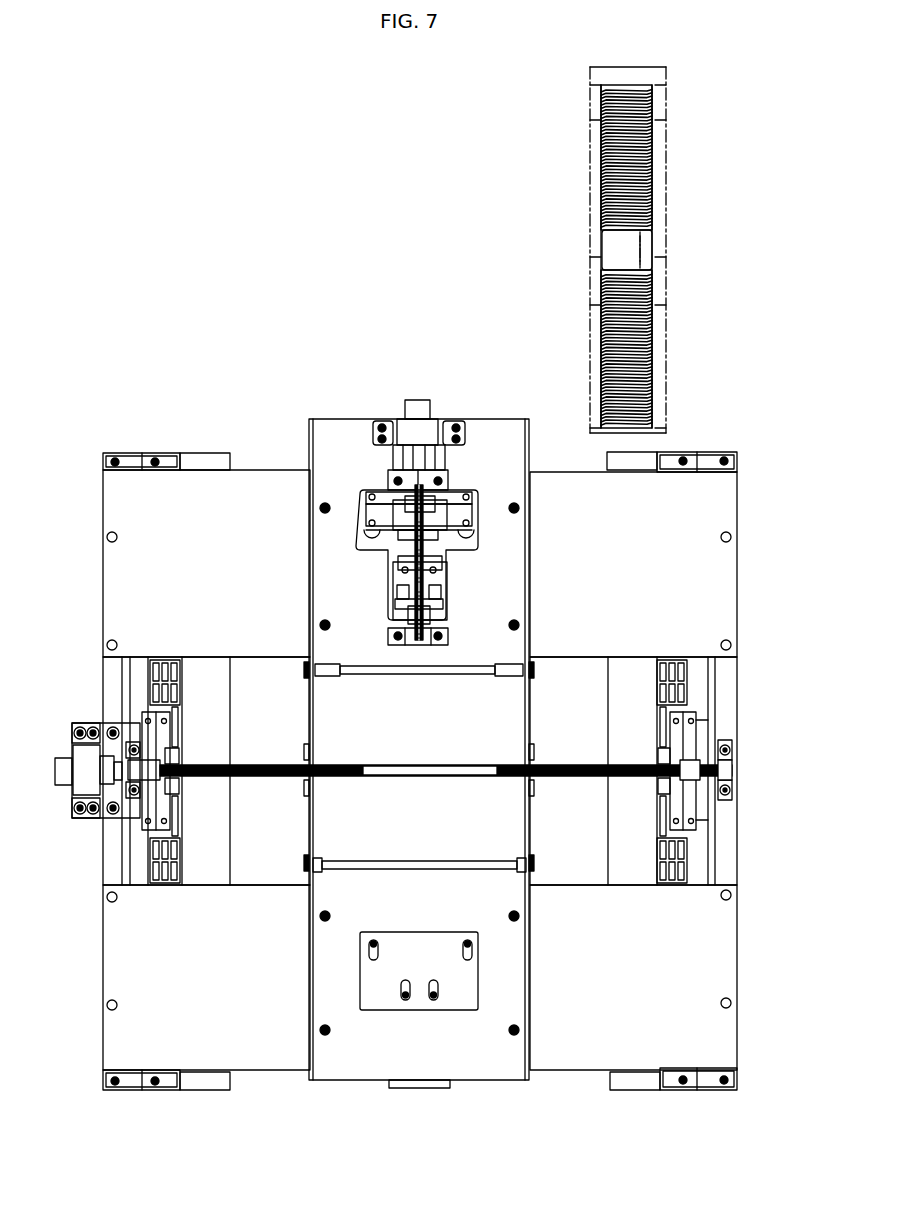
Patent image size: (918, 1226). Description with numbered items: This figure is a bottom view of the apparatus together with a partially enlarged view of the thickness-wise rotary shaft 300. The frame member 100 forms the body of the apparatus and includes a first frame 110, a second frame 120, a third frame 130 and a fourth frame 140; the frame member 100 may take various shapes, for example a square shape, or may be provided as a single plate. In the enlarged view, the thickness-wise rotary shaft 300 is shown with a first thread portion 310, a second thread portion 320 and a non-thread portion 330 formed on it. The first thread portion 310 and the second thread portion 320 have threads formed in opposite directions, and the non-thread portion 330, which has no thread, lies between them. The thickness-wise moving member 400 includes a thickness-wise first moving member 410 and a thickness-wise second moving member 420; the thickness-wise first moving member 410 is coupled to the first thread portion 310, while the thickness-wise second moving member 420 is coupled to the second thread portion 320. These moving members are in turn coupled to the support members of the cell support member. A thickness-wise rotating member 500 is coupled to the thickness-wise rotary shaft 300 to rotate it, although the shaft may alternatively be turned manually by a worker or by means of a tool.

The frame member 100 is at (46, 448).
The first frame 110 is at (114, 504).
The second frame 120 is at (114, 1043).
The third frame 130 is at (114, 678).
The fourth frame 140 is at (724, 682).
The thickness-wise rotary shaft 300 is at (416, 492).
The first thread portion 310 is at (652, 165).
The second thread portion 320 is at (652, 348).
The non-thread portion 330 is at (646, 241).
The thickness-wise moving member 400 is at (284, 404).
The thickness-wise first moving member 410 is at (363, 498).
The thickness-wise second moving member 420 is at (390, 575).
The thickness-wise rotating member 500 is at (422, 392).